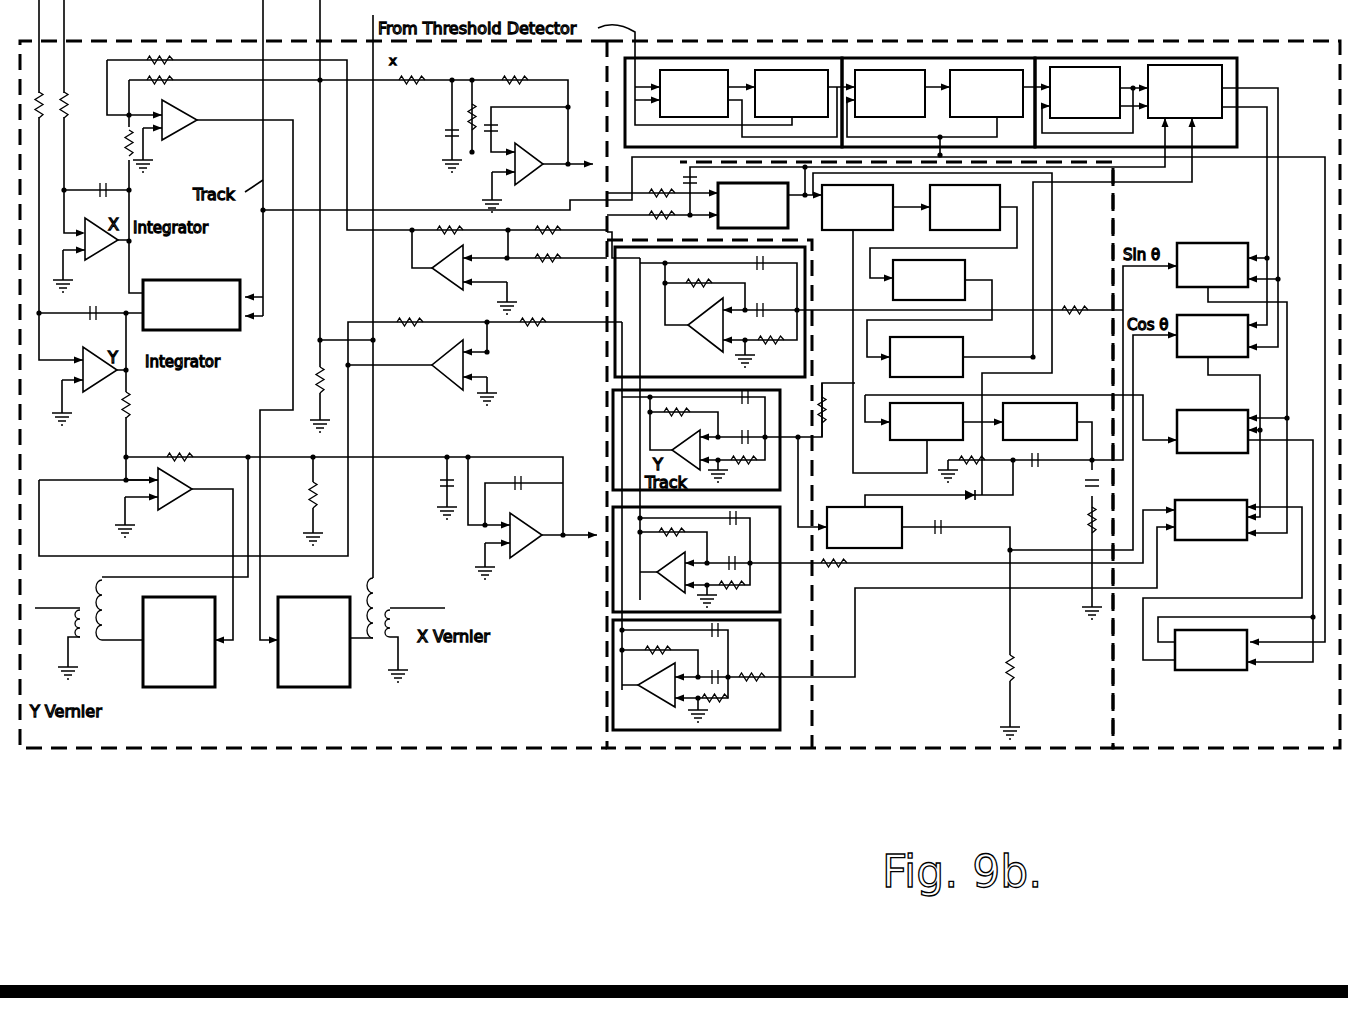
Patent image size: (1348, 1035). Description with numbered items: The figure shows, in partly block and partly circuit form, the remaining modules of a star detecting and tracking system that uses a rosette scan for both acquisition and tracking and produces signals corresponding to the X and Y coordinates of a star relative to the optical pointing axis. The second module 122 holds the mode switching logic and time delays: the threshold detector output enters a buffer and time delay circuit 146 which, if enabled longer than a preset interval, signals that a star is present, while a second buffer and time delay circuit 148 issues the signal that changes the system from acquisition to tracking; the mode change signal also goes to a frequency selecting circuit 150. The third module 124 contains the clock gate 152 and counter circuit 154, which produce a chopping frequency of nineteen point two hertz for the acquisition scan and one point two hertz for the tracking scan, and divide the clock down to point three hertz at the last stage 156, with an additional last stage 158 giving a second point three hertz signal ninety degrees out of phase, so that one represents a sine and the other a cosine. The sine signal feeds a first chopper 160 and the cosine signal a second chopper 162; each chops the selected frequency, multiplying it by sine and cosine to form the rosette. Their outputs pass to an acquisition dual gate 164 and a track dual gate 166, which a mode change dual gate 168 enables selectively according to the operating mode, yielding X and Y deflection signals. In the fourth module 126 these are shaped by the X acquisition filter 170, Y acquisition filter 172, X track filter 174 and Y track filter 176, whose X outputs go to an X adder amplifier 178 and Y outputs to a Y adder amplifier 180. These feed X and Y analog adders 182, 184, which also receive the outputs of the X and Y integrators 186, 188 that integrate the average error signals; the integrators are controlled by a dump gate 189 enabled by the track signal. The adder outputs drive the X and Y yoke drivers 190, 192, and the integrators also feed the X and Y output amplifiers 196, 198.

The Module 2 122 is at (1223, 747).
The Module 3 124 is at (880, 743).
The Module 4 126 is at (200, 742).
The Buffer and Time Delay circuit 146 is at (800, 58).
The second buffer and time delay circuit 148 is at (970, 58).
The Frequency Selecting Circuit 150 is at (1233, 58).
The clock gate 152 is at (750, 193).
The counter circuit 154 is at (1053, 258).
The last stage 156 is at (1068, 400).
The additional last stage 158 is at (895, 538).
The first Chopper 160 is at (1215, 243).
The second Chopper 162 is at (1192, 353).
The Acquisition dual gate 164 is at (1210, 540).
The Track dual gate 166 is at (1190, 450).
The Mode Change dual gate 168 is at (1202, 670).
The X acquisition filter 170 is at (780, 598).
The Y acquisition filter 172 is at (780, 662).
The X Track filter 174 is at (807, 365).
The Y Track filter 176 is at (797, 417).
The X Adder Amplifier 178 is at (448, 275).
The Y Adder Amplifier 180 is at (448, 382).
The X Analog Adder circuit 182 is at (187, 115).
The Y Analog Adder circuit 184 is at (160, 500).
The X Integrator 186 is at (100, 251).
The Y Integrator 188 is at (97, 378).
The dump gate 189 is at (222, 280).
The X Yoke driver 190 is at (287, 607).
The Y Yoke driver 192 is at (208, 678).
The X output amplifier 196 is at (540, 168).
The Y output amplifier 198 is at (538, 530).